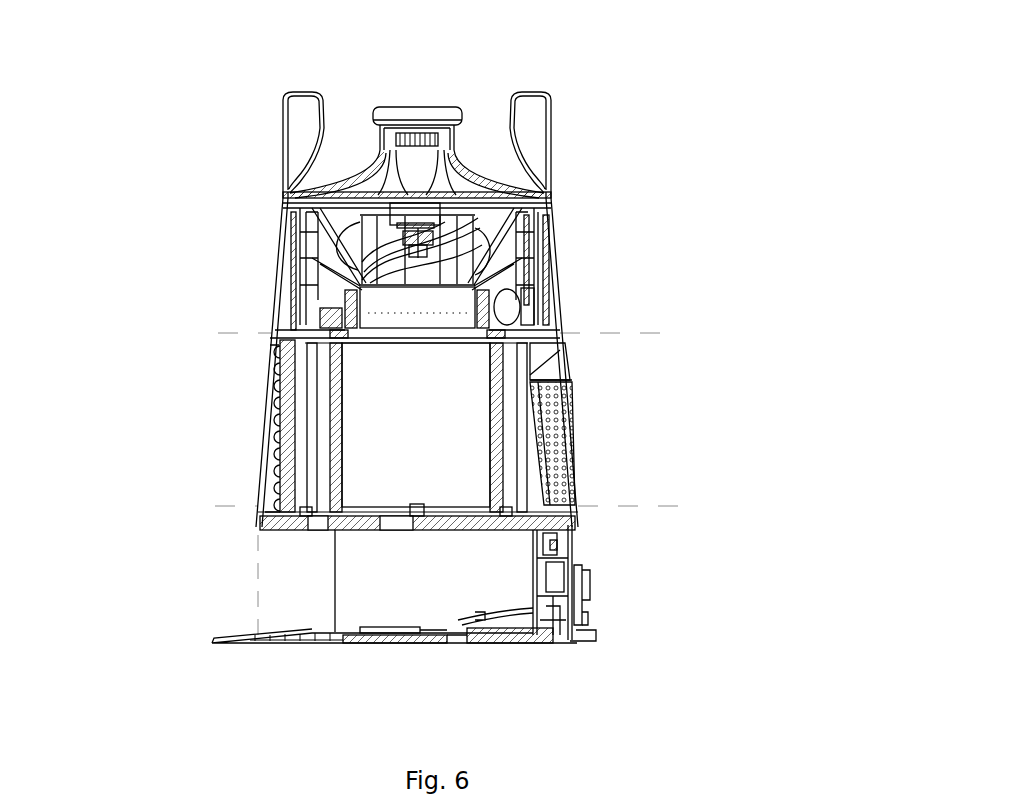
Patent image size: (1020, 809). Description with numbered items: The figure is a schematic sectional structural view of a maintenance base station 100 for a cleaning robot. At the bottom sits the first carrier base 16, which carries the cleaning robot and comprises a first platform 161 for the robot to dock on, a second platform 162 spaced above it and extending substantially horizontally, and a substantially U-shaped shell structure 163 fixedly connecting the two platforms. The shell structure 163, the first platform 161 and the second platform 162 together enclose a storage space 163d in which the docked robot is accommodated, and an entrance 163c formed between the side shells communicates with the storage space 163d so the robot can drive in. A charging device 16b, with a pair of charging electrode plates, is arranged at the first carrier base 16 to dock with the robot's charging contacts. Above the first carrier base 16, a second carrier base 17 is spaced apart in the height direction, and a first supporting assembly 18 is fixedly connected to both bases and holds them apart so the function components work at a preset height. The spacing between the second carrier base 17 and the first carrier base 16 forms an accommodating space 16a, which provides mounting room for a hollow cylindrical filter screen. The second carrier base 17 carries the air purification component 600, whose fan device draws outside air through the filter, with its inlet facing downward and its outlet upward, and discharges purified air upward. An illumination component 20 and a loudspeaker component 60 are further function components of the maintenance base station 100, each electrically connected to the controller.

The maintenance base station 100 is at (655, 132).
The illumination component 20 is at (290, 200).
The second carrier base 17 is at (295, 325).
The air purification component 600 is at (473, 243).
The loudspeaker component 60 is at (512, 278).
The first supporting assembly 18 is at (285, 465).
The accommodating space 16a is at (452, 437).
The second platform 162 is at (260, 527).
The entrance 163c is at (293, 585).
The shell structure 163 is at (573, 555).
The first carrier base 16 is at (590, 590).
The storage space 163d is at (385, 600).
The first platform 161 is at (395, 645).
The charging device 16b is at (475, 625).